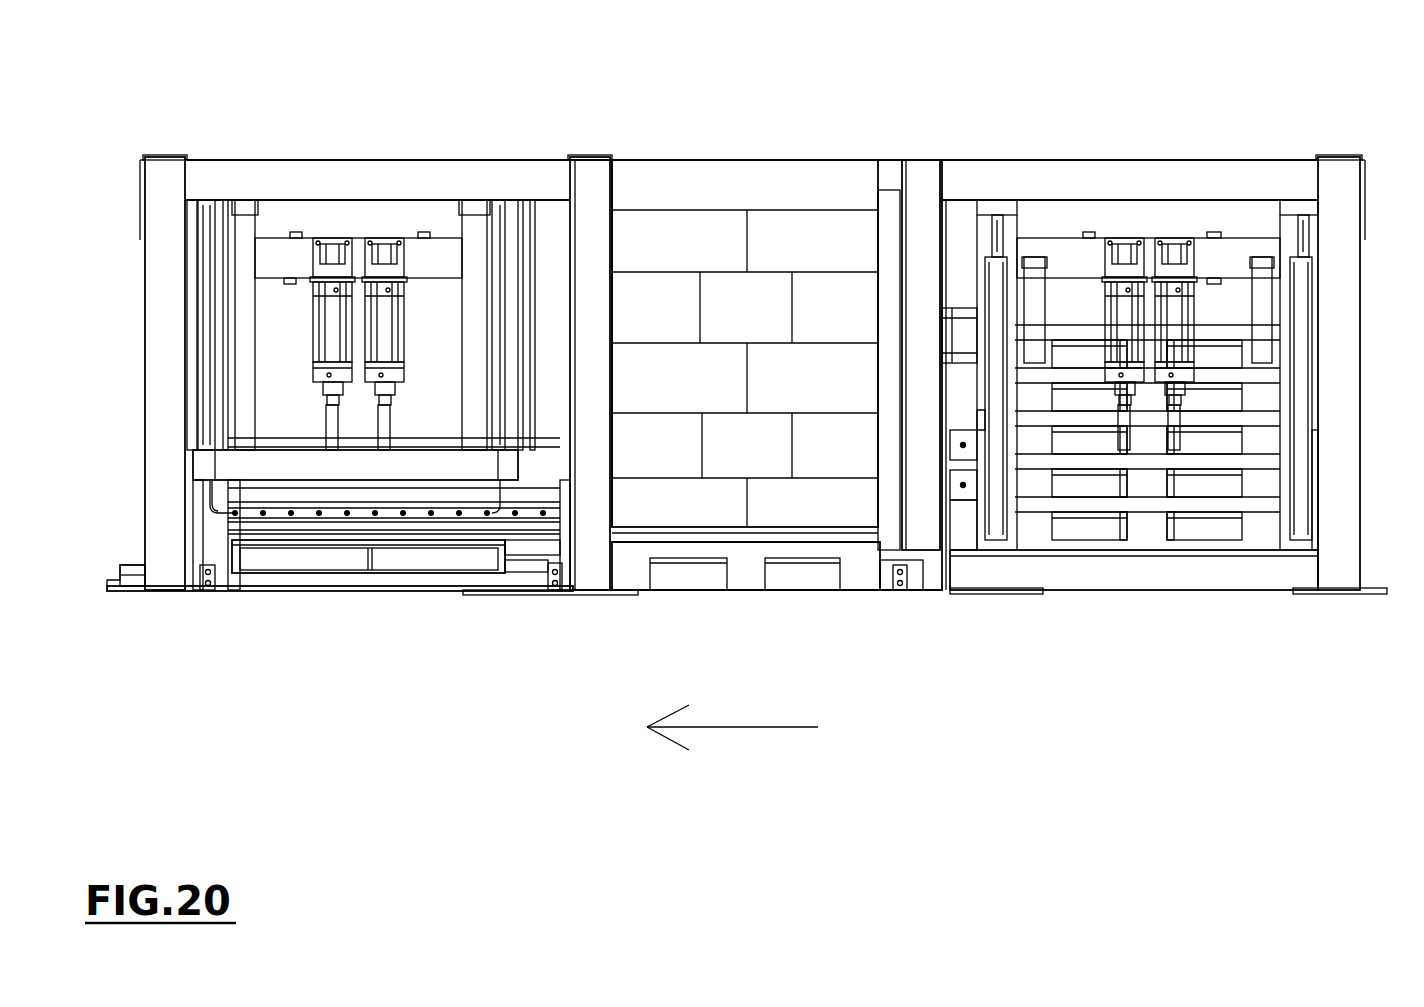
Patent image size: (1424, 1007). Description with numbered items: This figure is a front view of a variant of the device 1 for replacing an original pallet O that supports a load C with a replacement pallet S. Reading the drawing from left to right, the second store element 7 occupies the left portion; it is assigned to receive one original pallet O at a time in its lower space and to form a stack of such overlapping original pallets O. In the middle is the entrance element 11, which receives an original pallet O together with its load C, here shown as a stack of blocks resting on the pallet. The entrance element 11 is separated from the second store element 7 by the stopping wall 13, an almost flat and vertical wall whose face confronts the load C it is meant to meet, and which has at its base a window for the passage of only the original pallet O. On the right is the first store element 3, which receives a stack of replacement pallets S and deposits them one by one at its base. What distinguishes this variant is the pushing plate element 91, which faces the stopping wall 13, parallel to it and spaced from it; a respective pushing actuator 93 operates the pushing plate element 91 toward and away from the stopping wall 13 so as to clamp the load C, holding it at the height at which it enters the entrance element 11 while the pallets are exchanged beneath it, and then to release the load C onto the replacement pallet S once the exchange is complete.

The device for replacing an original pallet 1 is at (228, 102).
The second store element 7 is at (351, 205).
The stopping wall 13 is at (613, 315).
The entrance element 11 is at (754, 190).
The pushing plate element 91 is at (890, 297).
The pushing actuator 93 is at (964, 337).
The first store element 3 is at (1157, 210).
The load C is at (732, 328).
The original pallet O is at (370, 575).
The replacement pallet S is at (747, 575).